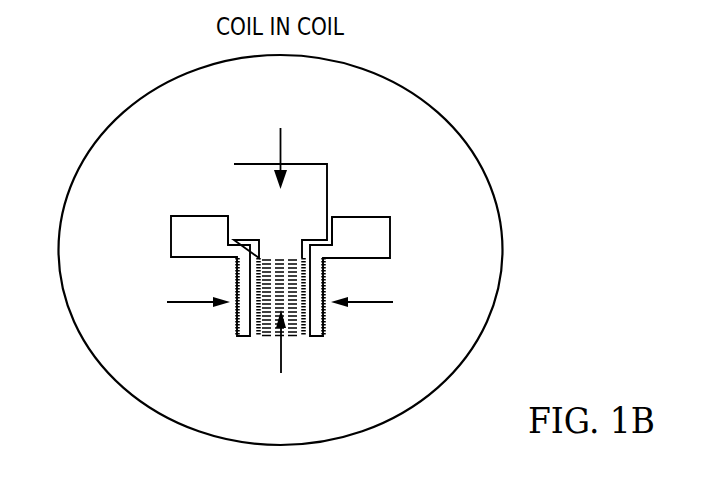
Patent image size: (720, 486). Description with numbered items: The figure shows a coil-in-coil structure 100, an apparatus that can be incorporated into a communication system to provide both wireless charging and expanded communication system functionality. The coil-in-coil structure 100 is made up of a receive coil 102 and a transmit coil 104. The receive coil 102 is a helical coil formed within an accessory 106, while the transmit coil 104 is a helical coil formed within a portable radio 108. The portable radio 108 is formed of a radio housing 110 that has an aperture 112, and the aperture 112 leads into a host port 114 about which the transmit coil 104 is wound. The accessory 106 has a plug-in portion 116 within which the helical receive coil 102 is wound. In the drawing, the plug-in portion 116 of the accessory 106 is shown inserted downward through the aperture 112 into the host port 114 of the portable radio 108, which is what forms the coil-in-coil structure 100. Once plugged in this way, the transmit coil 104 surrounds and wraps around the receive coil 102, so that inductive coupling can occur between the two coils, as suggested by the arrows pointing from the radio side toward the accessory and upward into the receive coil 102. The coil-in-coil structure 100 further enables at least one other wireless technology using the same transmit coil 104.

The coil-in-coil structure 100 is at (82, 420).
The receive coil 102 is at (202, 388).
The transmit coil 104 is at (237, 331).
The accessory 106 is at (343, 112).
The portable radio 108 is at (67, 300).
The radio housing 110 is at (386, 216).
The aperture 112 is at (230, 215).
The host port 114 is at (244, 283).
The plug-in portion 116 is at (288, 340).